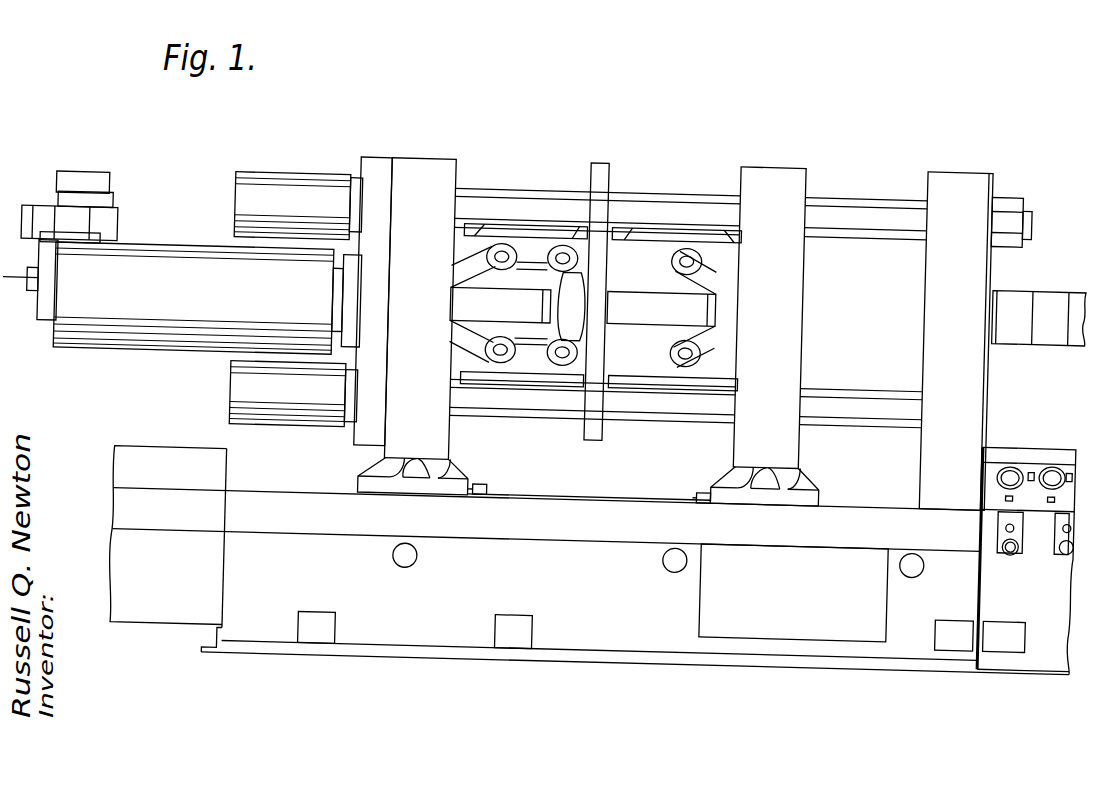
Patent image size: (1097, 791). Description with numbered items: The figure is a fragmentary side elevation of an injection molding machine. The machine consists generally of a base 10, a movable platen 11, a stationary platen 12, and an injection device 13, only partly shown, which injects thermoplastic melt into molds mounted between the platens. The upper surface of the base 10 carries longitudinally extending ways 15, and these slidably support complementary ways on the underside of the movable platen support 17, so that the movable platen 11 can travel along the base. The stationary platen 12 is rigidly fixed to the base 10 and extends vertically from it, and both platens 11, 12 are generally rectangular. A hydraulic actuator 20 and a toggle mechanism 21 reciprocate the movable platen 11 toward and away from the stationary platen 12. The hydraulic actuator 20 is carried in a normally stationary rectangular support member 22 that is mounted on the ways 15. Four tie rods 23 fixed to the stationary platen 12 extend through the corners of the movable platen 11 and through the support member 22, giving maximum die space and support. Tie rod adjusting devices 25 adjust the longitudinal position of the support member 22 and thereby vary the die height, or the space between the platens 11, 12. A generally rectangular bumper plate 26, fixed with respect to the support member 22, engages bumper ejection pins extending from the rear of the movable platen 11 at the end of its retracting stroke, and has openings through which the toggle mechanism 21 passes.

The base 10 is at (641, 635).
The movable platen 11 is at (764, 175).
The stationary platen 12 is at (952, 175).
The injection device 13 is at (1057, 287).
The ways 15 is at (593, 497).
The movable platen support 17 is at (729, 476).
The hydraulic actuator 20 is at (180, 249).
The toggle mechanism 21 is at (541, 230).
The support member 22 is at (412, 172).
The tie rods 23 is at (655, 197).
The tie rod adjusting devices 25 is at (284, 185).
The bumper plate 26 is at (599, 169).